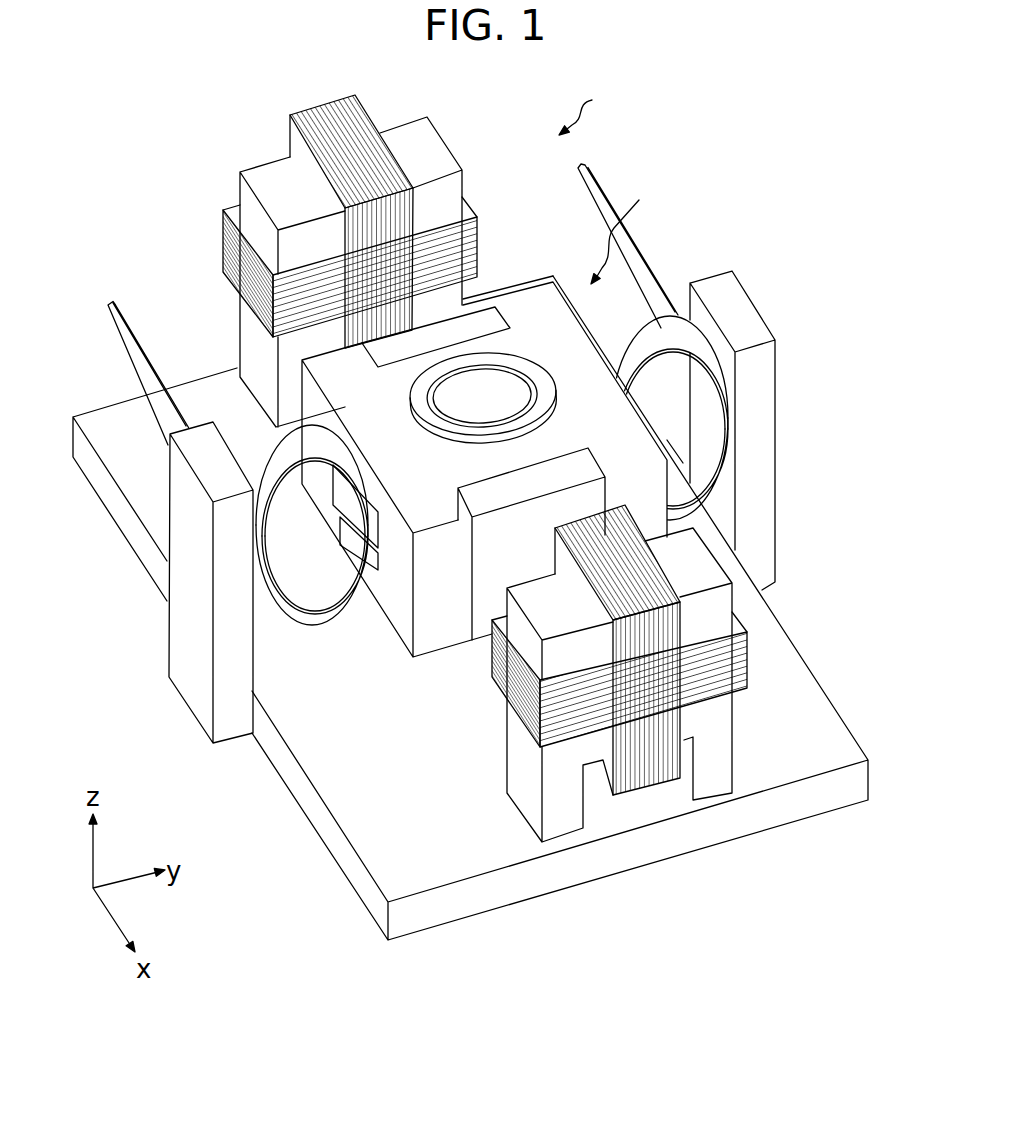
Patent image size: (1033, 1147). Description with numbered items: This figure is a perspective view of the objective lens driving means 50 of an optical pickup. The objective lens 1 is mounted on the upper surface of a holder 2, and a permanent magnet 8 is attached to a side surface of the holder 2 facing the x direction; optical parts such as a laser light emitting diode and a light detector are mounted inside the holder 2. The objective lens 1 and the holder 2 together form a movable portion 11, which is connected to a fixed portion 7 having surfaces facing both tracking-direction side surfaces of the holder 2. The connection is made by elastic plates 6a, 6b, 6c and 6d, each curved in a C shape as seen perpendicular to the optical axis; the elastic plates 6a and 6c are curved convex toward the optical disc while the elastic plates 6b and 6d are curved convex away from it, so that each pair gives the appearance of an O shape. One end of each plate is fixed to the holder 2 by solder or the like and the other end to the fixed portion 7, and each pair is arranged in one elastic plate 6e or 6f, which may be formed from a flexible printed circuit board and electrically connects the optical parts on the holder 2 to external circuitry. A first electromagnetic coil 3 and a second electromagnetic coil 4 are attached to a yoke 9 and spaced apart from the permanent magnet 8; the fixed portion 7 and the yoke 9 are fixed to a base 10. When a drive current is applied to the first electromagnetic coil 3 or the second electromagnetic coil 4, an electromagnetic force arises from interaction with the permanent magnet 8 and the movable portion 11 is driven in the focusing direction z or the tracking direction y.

The objective lens 1 is at (510, 390).
The holder 2 is at (534, 300).
The first electromagnetic coil 3 is at (227, 244).
The second electromagnetic coil 4 is at (323, 114).
The elastic plate 6a is at (268, 453).
The elastic plate 6b is at (318, 608).
The elastic plate 6c is at (662, 326).
The elastic plate 6d is at (684, 484).
The elastic plate 6e is at (112, 340).
The elastic plate 6f is at (584, 202).
The fixed portion 7 is at (177, 635).
The permanent magnet 8 is at (483, 316).
The yoke 9 is at (268, 176).
The base 10 is at (452, 913).
The movable portion 11 is at (632, 234).
The objective lens driving means 50 is at (593, 104).